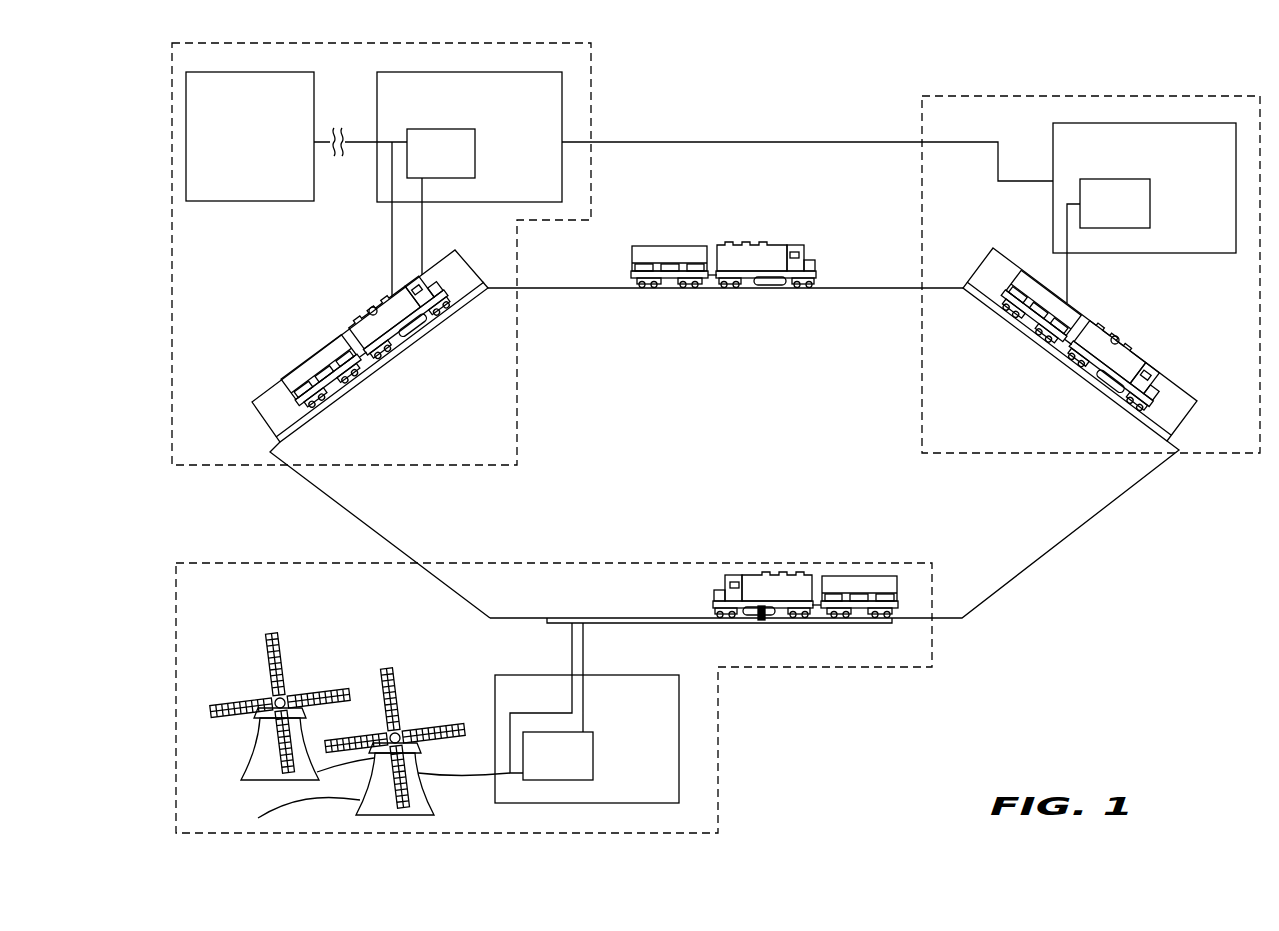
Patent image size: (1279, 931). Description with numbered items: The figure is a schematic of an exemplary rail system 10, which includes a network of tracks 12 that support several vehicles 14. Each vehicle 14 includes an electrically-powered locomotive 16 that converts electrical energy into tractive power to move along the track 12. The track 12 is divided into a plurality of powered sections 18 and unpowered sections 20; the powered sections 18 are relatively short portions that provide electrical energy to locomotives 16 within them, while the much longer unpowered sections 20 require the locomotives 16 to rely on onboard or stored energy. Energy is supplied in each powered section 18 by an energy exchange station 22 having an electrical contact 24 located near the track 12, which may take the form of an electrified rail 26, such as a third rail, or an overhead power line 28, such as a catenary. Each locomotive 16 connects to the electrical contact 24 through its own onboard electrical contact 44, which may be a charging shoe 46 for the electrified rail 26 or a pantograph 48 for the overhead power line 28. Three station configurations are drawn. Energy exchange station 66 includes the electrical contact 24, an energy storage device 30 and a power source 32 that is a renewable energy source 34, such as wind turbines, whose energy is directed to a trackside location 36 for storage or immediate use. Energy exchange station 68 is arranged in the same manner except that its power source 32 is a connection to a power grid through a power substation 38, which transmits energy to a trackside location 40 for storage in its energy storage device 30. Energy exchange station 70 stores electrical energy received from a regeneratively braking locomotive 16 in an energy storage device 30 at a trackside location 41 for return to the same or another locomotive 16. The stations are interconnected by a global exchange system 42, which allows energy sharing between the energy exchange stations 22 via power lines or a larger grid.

The rail system 10 is at (745, 90).
The track 12 is at (1037, 563).
The vehicle 14 is at (725, 391).
The locomotive 16 is at (407, 333).
The powered section 18 is at (293, 437).
The unpowered section 20 is at (598, 289).
The energy exchange station 22 is at (732, 455).
The electrical contact 24 is at (732, 455).
The electrified rail 26 is at (618, 624).
The overhead power line 28 is at (277, 387).
The energy storage device 30 is at (451, 165).
The power source 32 is at (325, 443).
The renewable energy source 34 is at (270, 783).
The trackside location 36 is at (640, 720).
The power substation 38 is at (253, 133).
The trackside location 40 is at (525, 121).
The trackside location 41 is at (1208, 161).
The global exchange system 42 is at (860, 142).
The electrical contact 44 is at (752, 456).
The charging shoe 46 is at (765, 622).
The pantograph 48 is at (373, 307).
The energy exchange station 66 is at (265, 563).
The energy exchange station 68 is at (263, 43).
The energy exchange station 70 is at (1091, 274).